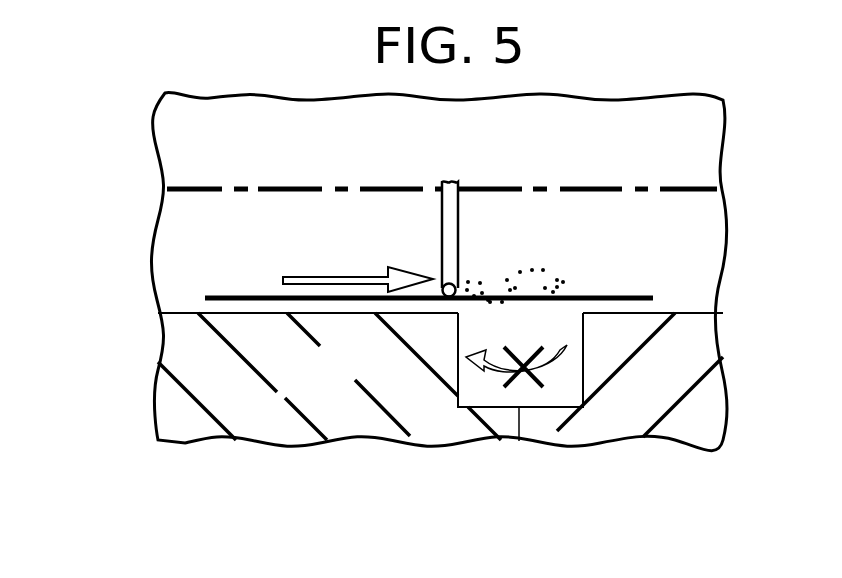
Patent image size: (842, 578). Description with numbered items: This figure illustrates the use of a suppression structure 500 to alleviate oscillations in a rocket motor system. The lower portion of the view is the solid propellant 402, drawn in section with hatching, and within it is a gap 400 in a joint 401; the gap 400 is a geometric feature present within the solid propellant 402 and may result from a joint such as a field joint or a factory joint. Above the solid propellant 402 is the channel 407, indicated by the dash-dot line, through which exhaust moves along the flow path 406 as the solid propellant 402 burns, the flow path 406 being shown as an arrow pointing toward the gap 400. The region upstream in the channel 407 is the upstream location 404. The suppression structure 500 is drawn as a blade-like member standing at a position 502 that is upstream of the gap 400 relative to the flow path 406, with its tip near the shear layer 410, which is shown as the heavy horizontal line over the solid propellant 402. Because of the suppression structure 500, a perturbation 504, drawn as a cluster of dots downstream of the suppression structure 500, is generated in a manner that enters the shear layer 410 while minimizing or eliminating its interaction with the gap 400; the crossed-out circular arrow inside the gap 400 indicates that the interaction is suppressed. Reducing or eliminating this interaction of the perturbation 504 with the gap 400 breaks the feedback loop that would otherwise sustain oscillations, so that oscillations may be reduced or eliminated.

The gap 400 is at (583, 386).
The joint 401 is at (522, 427).
The solid propellant 402 is at (345, 390).
The upstream location 404 is at (183, 292).
The flow path 406 is at (313, 277).
The channel 407 is at (480, 164).
The shear layer 410 is at (240, 297).
The suppression structure 500 is at (460, 240).
The position 502 is at (435, 280).
The perturbation 504 is at (557, 272).